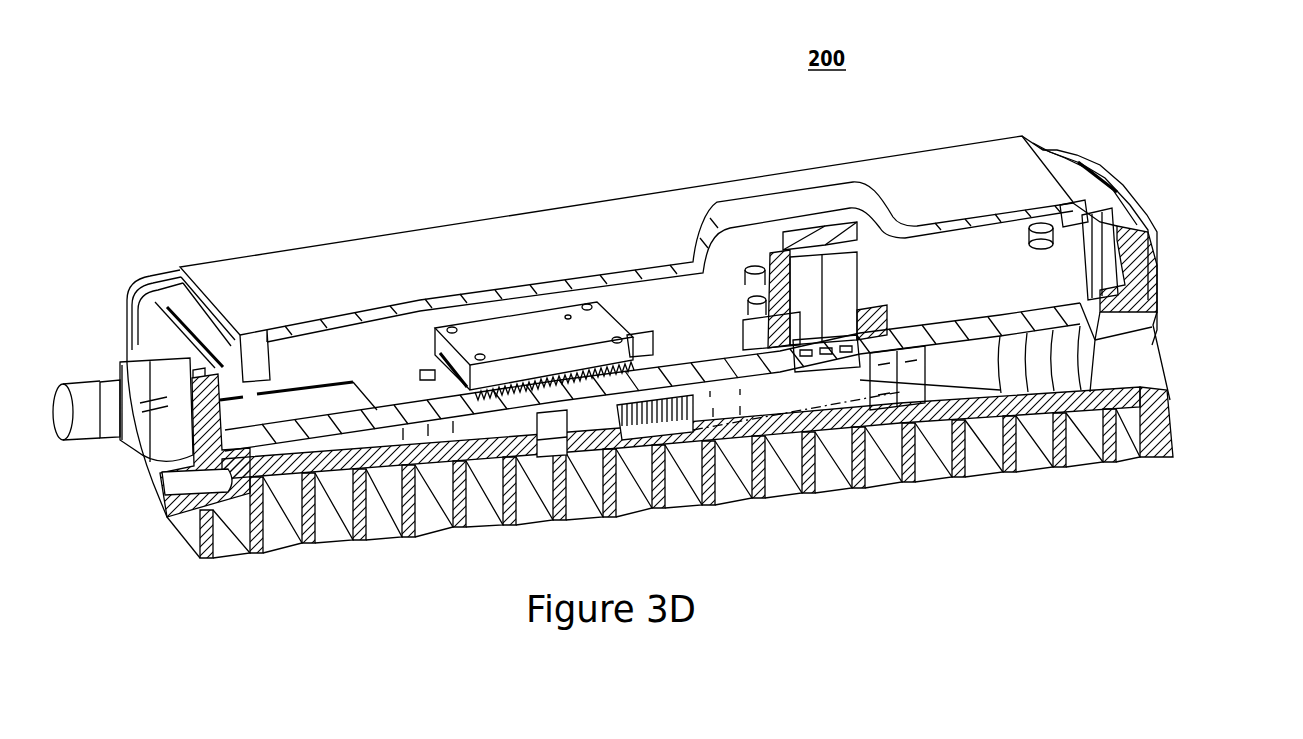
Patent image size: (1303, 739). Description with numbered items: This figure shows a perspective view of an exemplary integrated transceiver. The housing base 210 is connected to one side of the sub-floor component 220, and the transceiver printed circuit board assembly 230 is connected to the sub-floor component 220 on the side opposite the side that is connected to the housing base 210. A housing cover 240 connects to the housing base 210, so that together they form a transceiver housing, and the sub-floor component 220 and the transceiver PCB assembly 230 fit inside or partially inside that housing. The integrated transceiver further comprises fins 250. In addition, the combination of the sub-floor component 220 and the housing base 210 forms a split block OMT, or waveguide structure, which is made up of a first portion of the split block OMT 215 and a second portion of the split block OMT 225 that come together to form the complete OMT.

The housing base 210 is at (602, 457).
The first portion of the split block OMT 215 is at (1125, 366).
The sub-floor component 220 is at (515, 420).
The second portion of the split block OMT 225 is at (1141, 318).
The transceiver printed circuit board assembly 230 is at (690, 318).
The housing cover 240 is at (246, 268).
The fins 250 is at (200, 562).